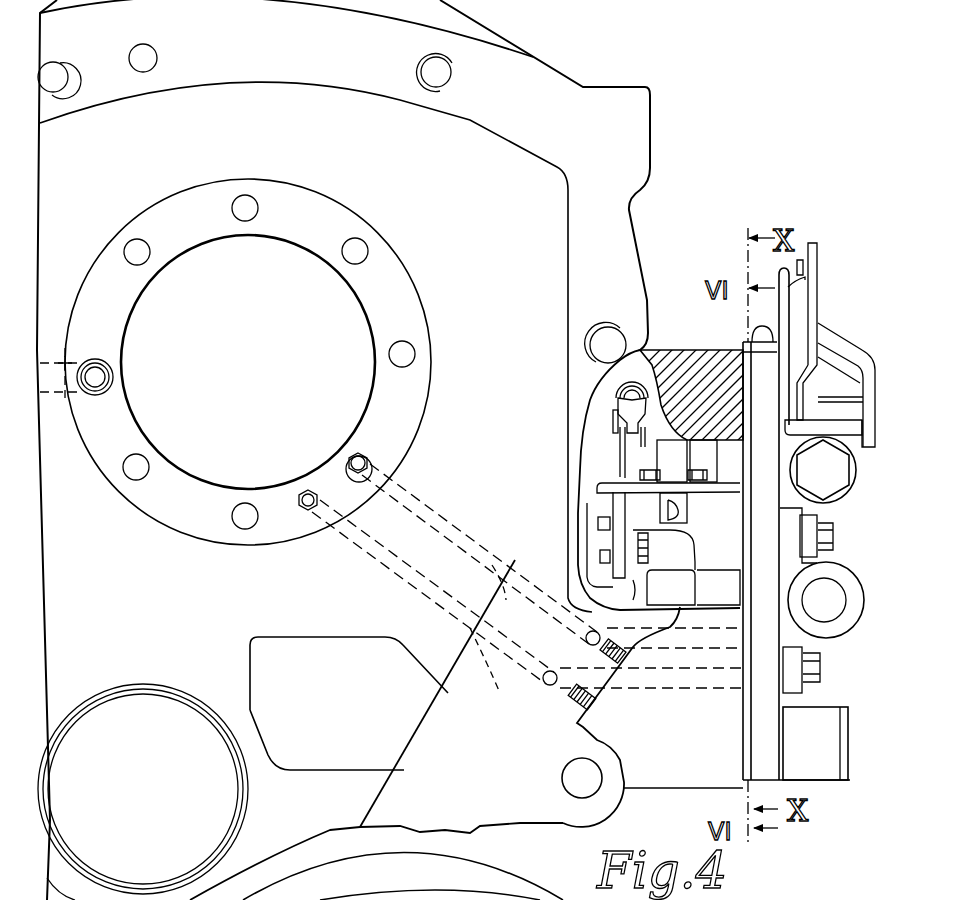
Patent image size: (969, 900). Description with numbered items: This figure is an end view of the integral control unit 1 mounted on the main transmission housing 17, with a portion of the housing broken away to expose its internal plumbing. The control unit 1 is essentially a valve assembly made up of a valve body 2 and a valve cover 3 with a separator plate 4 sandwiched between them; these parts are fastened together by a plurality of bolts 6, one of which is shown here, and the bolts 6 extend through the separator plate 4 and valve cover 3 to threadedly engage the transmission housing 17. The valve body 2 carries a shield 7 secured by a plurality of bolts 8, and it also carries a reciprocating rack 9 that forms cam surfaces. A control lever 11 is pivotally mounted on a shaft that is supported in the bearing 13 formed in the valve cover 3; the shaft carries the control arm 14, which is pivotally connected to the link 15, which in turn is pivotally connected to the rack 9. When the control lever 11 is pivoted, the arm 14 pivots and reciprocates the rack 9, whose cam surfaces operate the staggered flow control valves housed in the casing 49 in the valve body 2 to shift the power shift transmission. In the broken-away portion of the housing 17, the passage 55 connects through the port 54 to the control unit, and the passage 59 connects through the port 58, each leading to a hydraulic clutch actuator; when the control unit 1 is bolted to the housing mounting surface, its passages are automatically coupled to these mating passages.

The control unit 1 is at (790, 700).
The valve body 2 is at (733, 517).
The valve cover 3 is at (853, 784).
The separator plate 4 is at (745, 745).
The bolts 6 is at (650, 546).
The shield 7 is at (587, 527).
The bolts 8 is at (652, 473).
The reciprocating rack 9 is at (610, 492).
The control lever 11 is at (845, 340).
The bearing 13 is at (845, 433).
The control arm 14 is at (612, 455).
The link 15 is at (640, 582).
The main transmission housing 17 is at (688, 357).
The casing 49 is at (637, 592).
The port 54 is at (702, 628).
The passage 55 is at (585, 639).
The port 58 is at (658, 685).
The passage 59 is at (543, 683).